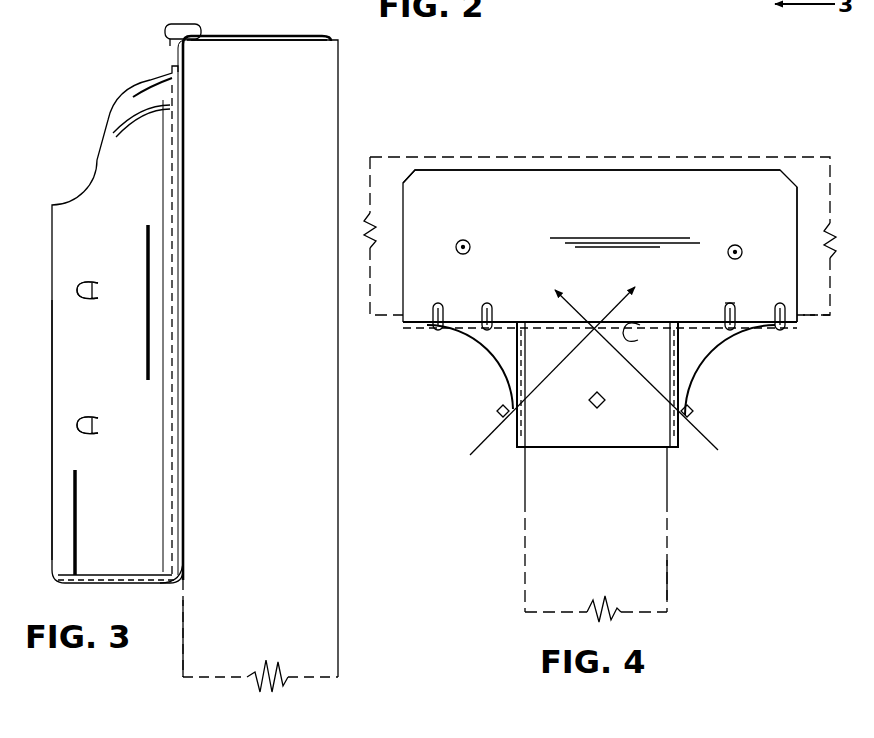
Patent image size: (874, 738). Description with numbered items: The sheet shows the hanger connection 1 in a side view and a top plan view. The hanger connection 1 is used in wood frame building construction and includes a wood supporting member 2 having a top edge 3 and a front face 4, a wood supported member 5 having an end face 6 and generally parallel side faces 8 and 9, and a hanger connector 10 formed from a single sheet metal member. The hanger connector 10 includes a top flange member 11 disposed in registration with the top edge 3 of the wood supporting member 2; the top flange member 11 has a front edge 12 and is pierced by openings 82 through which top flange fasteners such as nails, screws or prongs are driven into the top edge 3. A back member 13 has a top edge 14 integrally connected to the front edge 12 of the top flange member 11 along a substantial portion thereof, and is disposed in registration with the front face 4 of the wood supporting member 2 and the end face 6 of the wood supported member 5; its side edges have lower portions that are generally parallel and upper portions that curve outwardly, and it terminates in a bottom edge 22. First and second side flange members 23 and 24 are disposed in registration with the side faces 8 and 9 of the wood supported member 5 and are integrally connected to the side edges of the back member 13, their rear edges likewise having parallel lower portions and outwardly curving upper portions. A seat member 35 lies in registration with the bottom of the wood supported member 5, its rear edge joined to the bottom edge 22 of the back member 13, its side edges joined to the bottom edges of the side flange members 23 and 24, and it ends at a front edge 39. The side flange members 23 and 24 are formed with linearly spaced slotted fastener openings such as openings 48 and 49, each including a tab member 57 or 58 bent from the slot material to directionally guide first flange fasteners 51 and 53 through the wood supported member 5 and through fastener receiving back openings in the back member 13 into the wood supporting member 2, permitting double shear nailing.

In FIG. 3, the hanger connection 1 is at (143, 62).
In FIG. 4, the hanger connection 1 is at (740, 138).
In FIG. 3, the wood supporting member 2 is at (350, 111).
In FIG. 4, the wood supporting member 2 is at (640, 152).
In FIG. 3, the top edge 3 is at (334, 38).
In FIG. 4, the top edge 3 is at (822, 194).
In FIG. 3, the front face 4 is at (180, 676).
In FIG. 4, the front face 4 is at (813, 322).
In FIG. 4, the wood supported member 5 is at (672, 576).
In FIG. 4, the end face 6 is at (636, 335).
In FIG. 4, the side face 8 is at (524, 520).
In FIG. 4, the side face 9 is at (668, 530).
In FIG. 3, the hanger connector 10 is at (45, 228).
In FIG. 4, the hanger connector 10 is at (510, 160).
In FIG. 3, the top flange member 11 is at (248, 33).
In FIG. 4, the top flange member 11 is at (556, 180).
In FIG. 3, the front edge 12 is at (169, 32).
In FIG. 4, the front edge 12 is at (732, 332).
In FIG. 3, the back member 13 is at (168, 126).
In FIG. 4, the back member 13 is at (560, 322).
In FIG. 4, the top edge 14 is at (510, 320).
In FIG. 3, the bottom edge 22 is at (170, 572).
In FIG. 4, the first side flange member 23 is at (505, 354).
In FIG. 3, the second side flange member 24 is at (72, 358).
In FIG. 4, the second side flange member 24 is at (690, 370).
In FIG. 4, the seat member 35 is at (600, 389).
In FIG. 4, the front edge 39 is at (595, 448).
In FIG. 3, the first slotted fastener opening 48 is at (90, 433).
In FIG. 3, the first slotted fastener opening 49 is at (92, 298).
In FIG. 4, the first flange fastener 51 is at (476, 446).
In FIG. 4, the first flange fastener 53 is at (710, 450).
In FIG. 3, the tab member 57 is at (90, 420).
In FIG. 3, the tab member 58 is at (92, 286).
In FIG. 4, the openings 82 is at (470, 246).